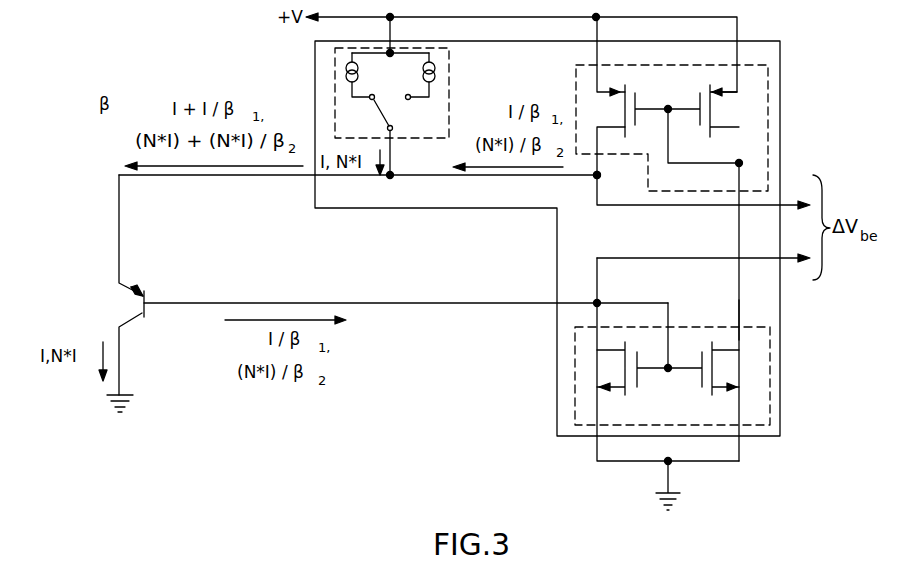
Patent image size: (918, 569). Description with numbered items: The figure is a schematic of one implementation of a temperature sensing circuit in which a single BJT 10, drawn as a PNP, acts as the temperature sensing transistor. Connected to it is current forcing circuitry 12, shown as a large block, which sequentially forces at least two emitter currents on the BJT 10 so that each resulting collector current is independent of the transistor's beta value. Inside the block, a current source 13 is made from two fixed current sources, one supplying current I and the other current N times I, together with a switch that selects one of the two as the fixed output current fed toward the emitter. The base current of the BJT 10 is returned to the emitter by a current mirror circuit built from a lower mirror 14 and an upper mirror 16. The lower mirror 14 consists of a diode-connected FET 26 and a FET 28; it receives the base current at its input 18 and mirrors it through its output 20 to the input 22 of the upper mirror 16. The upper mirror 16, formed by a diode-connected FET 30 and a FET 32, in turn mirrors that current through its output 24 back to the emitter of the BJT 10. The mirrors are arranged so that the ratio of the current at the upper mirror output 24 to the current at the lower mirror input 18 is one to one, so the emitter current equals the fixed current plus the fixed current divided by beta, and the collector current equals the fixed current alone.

The BJT 10 is at (112, 306).
The current forcing circuitry 12 is at (760, 40).
The current source 13 is at (450, 86).
The lower mirror 14 is at (672, 359).
The upper mirror 16 is at (672, 118).
The input of lower mirror 18 is at (600, 326).
The output of lower mirror 20 is at (740, 318).
The input of upper mirror 22 is at (738, 168).
The output of upper mirror 24 is at (599, 157).
The diode-connected FET 26 is at (606, 399).
The FET 28 is at (731, 399).
The diode-connected FET 30 is at (730, 82).
The FET 32 is at (606, 82).